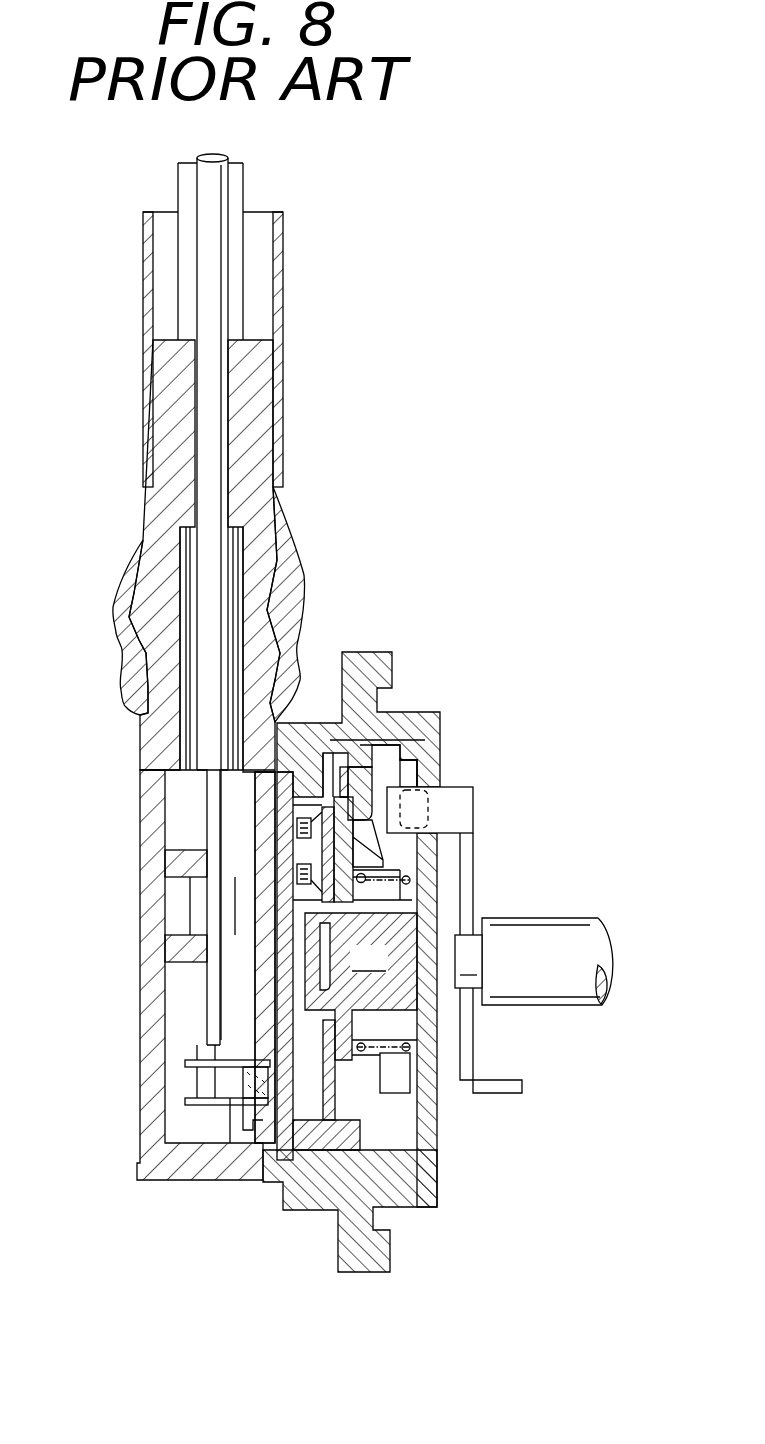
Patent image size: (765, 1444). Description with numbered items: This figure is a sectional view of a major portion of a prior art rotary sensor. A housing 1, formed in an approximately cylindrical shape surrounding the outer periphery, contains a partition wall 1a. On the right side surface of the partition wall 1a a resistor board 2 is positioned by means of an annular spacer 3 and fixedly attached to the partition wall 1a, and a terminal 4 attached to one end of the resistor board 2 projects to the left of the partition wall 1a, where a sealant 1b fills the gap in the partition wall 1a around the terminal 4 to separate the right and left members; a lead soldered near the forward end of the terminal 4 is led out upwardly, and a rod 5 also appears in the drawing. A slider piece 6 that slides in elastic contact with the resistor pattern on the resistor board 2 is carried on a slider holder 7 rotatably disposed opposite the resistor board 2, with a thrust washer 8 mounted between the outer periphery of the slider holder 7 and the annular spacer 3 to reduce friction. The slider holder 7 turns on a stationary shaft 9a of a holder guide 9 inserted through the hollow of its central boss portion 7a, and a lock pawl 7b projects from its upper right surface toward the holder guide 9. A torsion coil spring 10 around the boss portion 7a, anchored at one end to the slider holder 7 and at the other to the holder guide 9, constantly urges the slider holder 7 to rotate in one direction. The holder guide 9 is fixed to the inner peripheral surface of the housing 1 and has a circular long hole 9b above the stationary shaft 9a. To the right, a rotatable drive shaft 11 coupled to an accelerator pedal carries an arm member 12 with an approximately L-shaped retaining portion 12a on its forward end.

The housing 1 is at (218, 1183).
The partition wall 1a is at (262, 805).
The sealant 1b is at (240, 1085).
The resistor board 2 is at (300, 1175).
The annular spacer 3 is at (310, 1140).
The terminal 4 is at (190, 1101).
The rod 5 is at (200, 302).
The slider piece 6 is at (362, 758).
The slider holder 7 is at (352, 742).
The boss portion 7a is at (412, 880).
The lock pawl 7b is at (430, 742).
The thrust washer 8 is at (352, 1150).
The holder guide 9 is at (445, 1053).
The stationary shaft 9a is at (361, 986).
The circular long hole 9b is at (440, 776).
The torsion coil spring 10 is at (402, 1066).
The drive shaft 11 is at (588, 928).
The arm member 12 is at (480, 842).
The retaining portion 12a is at (472, 798).